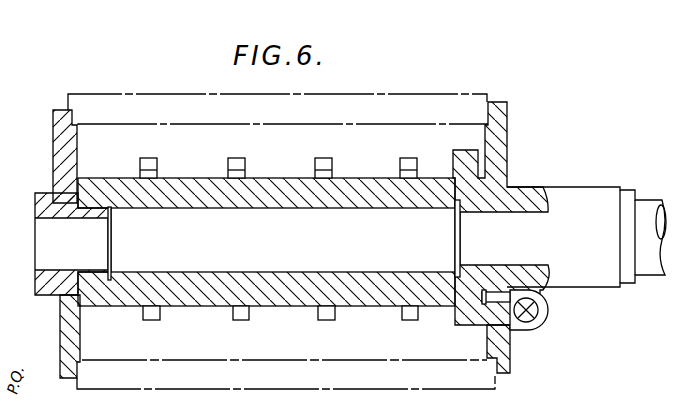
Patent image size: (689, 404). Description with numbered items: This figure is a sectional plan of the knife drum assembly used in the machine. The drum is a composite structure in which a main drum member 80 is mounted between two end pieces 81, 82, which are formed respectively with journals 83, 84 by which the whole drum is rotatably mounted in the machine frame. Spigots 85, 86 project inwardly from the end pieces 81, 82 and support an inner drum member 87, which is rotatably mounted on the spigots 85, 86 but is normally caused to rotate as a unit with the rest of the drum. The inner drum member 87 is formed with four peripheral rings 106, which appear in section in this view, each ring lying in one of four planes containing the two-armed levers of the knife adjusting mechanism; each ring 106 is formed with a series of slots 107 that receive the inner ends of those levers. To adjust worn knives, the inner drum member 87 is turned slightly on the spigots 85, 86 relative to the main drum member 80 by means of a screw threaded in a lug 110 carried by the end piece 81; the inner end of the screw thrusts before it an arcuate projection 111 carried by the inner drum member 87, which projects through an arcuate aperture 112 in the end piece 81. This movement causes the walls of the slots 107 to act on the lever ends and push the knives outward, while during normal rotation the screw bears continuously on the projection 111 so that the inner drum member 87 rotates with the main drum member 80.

The main drum member 80 is at (262, 389).
The end piece 81 is at (503, 148).
The end piece 82 is at (68, 153).
The journal 83 is at (572, 204).
The journal 84 is at (65, 204).
The spigot 85 is at (457, 270).
The spigot 86 is at (110, 217).
The inner drum member 87 is at (258, 193).
The peripheral ring 106 is at (143, 172).
The slot 107 is at (328, 168).
The lug 110 is at (548, 312).
The arcuate projection 111 is at (475, 307).
The arcuate aperture 112 is at (532, 332).